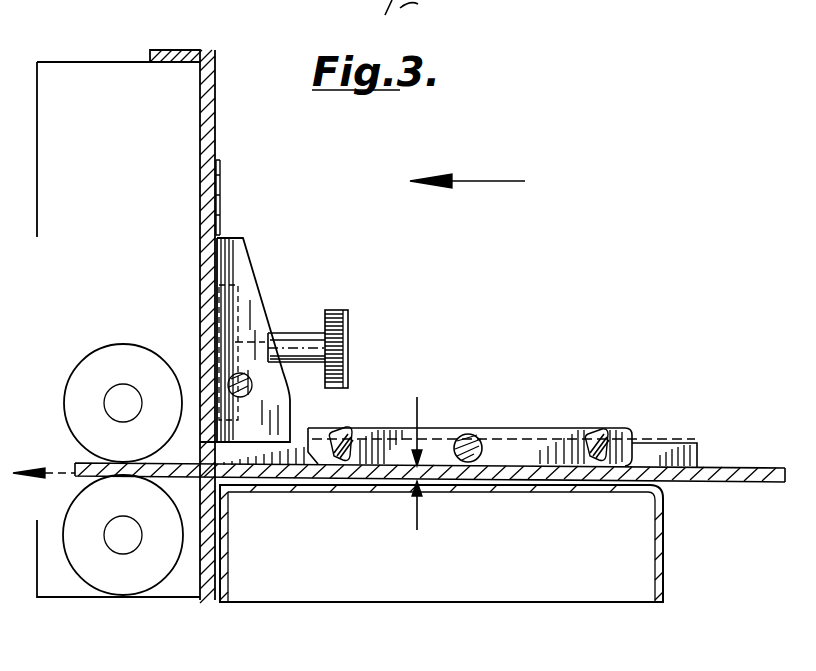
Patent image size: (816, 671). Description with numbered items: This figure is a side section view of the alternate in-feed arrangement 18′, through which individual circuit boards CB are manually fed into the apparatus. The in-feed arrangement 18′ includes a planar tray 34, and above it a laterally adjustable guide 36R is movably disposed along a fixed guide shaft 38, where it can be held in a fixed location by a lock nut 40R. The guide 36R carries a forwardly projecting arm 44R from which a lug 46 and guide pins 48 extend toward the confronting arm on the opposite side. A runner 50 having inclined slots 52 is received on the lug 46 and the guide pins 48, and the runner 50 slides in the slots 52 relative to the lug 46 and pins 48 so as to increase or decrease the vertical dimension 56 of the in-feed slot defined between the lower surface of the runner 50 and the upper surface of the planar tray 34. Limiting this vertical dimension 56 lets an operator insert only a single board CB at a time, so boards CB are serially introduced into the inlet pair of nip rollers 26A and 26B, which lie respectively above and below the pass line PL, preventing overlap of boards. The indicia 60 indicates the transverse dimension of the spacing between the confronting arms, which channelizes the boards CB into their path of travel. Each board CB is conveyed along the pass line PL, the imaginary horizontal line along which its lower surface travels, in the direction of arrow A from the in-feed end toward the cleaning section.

The in-feed arrangement 18′ is at (125, 50).
The indicia 60 is at (220, 188).
The right guide 36R is at (255, 300).
The guide shaft 38 is at (272, 332).
The lock nut 40R is at (333, 318).
The inlet nip roller 26A is at (150, 370).
The inlet nip roller 26B is at (128, 572).
The circuit board CB is at (745, 468).
The pass line PL is at (52, 470).
The runner 50 is at (388, 452).
The forwardly projecting arm 44R is at (730, 421).
The lug 46 is at (480, 452).
The inclined slot 52 is at (340, 452).
The guide pin 48 is at (337, 455).
The vertical dimension 56 is at (422, 462).
The planar tray 34 is at (551, 487).
The arrow A is at (515, 181).